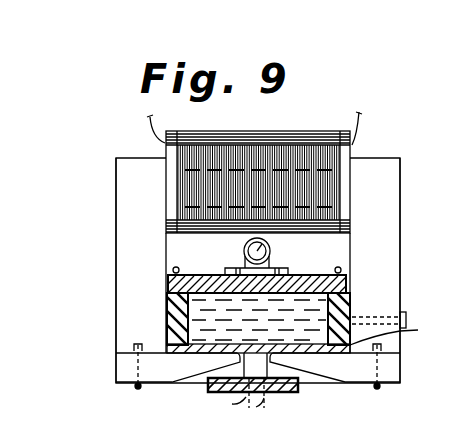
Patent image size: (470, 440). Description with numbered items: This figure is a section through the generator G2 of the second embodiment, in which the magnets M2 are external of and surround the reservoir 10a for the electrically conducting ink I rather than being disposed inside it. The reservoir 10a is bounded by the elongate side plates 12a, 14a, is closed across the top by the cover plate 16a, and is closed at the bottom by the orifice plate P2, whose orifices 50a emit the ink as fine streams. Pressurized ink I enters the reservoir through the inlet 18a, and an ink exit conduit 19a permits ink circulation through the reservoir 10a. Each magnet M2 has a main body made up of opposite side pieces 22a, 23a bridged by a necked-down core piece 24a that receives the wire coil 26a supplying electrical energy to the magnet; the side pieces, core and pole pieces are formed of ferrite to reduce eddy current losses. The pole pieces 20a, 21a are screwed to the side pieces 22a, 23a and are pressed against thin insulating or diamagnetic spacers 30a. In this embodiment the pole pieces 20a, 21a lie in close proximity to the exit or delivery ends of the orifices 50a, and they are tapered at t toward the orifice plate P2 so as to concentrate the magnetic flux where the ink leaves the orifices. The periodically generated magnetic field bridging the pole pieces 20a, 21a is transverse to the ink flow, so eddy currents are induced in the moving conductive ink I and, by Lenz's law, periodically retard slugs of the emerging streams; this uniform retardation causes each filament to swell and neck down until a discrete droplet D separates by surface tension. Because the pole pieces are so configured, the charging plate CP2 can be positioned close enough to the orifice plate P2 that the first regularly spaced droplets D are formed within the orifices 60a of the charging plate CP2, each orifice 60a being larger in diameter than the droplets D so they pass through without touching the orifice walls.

The generator G2 is at (393, 126).
The magnets M2 is at (403, 172).
The magnet side piece 22a is at (116, 190).
The magnet side piece 23a is at (400, 197).
The core piece 24a is at (297, 140).
The coil 26a is at (217, 136).
The inlet 18a is at (266, 246).
The cover plate 16a is at (327, 276).
The side plate 14a is at (348, 306).
The ink I is at (287, 296).
The reservoir 10a is at (170, 298).
The side plate 12a is at (172, 312).
The spacer 30a is at (166, 350).
The orifices 50a is at (250, 350).
The orifice plate P2 is at (394, 328).
The pole piece 20a is at (116, 370).
The pole piece 21a is at (400, 365).
The taper t is at (172, 383).
The charging plate CP2 is at (297, 392).
The charging plate orifices 60a is at (246, 392).
The droplet D is at (241, 409).
The ink exit conduit 19a is at (290, 433).